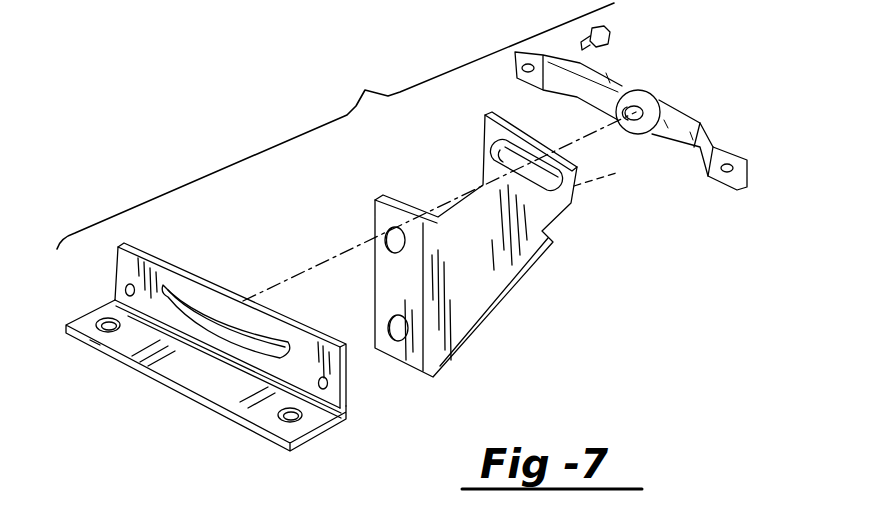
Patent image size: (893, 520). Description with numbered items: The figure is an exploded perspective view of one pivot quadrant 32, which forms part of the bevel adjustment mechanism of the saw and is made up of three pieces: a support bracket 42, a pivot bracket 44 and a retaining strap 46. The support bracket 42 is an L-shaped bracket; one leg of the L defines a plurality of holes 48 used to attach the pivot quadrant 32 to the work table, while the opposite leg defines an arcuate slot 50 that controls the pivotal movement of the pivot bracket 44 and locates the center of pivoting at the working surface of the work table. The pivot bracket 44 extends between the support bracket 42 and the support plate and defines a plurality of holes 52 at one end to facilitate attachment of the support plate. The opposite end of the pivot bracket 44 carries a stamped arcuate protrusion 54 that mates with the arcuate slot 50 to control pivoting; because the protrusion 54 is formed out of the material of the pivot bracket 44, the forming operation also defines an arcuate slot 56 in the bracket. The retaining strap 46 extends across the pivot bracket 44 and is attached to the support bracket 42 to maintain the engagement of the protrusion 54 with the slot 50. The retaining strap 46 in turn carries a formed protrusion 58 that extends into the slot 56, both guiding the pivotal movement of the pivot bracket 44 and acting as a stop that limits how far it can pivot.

The pivot quadrant 32 is at (335, 126).
The support bracket 42 is at (135, 338).
The pivot bracket 44 is at (485, 285).
The retaining strap 46 is at (745, 170).
The holes 48 is at (103, 323).
The arcuate slot 50 is at (213, 333).
The holes 52 is at (384, 238).
The stamped arcuate protrusion 54 is at (490, 151).
The arcuate slot 56 is at (613, 174).
The formed protrusion 58 is at (632, 91).